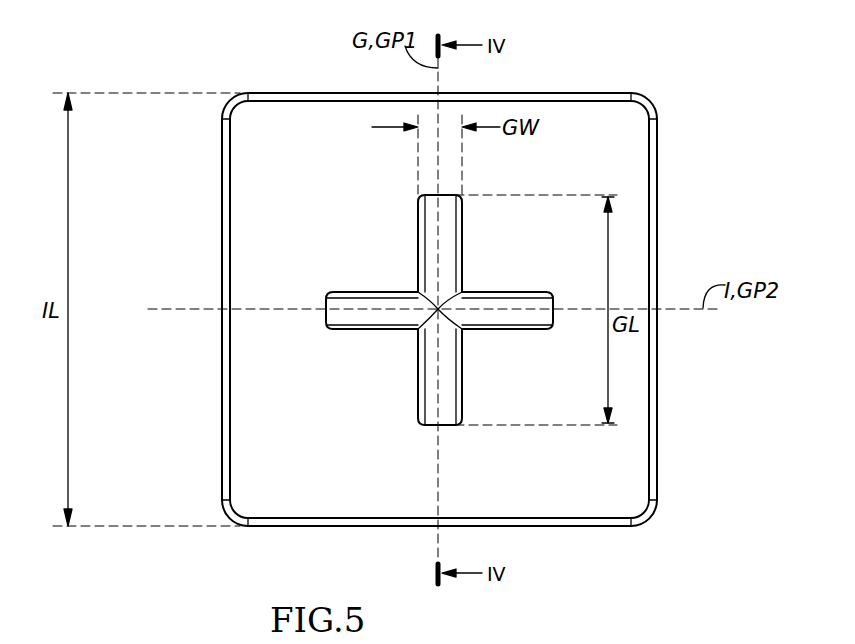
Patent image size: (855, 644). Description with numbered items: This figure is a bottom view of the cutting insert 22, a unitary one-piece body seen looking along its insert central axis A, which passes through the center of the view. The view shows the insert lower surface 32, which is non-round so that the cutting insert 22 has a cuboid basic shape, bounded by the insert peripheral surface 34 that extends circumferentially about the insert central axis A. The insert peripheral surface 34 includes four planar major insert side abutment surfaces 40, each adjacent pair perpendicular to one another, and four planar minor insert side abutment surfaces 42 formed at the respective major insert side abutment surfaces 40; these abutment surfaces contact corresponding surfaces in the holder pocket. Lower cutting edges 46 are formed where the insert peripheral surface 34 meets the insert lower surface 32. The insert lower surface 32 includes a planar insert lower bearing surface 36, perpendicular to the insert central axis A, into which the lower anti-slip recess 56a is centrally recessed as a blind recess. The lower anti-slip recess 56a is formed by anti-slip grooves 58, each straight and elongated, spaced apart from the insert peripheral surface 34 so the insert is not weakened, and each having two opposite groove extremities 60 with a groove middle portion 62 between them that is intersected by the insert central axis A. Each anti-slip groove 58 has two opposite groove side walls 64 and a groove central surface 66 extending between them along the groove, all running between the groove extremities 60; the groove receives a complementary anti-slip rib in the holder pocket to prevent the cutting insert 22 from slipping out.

The cutting insert 22 is at (685, 75).
The insert lower surface 32 is at (620, 222).
The insert peripheral surface 34 is at (657, 390).
The insert lower bearing surface 36 is at (540, 230).
The major insert side abutment surface 40 is at (333, 92).
The minor insert side abutment surface 42 is at (393, 92).
The lower cutting edge 46 is at (305, 92).
The lower anti-slip recess 56a is at (402, 358).
The anti-slip groove 58 is at (460, 228).
The groove extremities 60 is at (447, 203).
The groove middle portion 62 is at (445, 327).
The groove side walls 64 is at (457, 242).
The groove central surface 66 is at (432, 223).
The insert central axis A is at (440, 305).